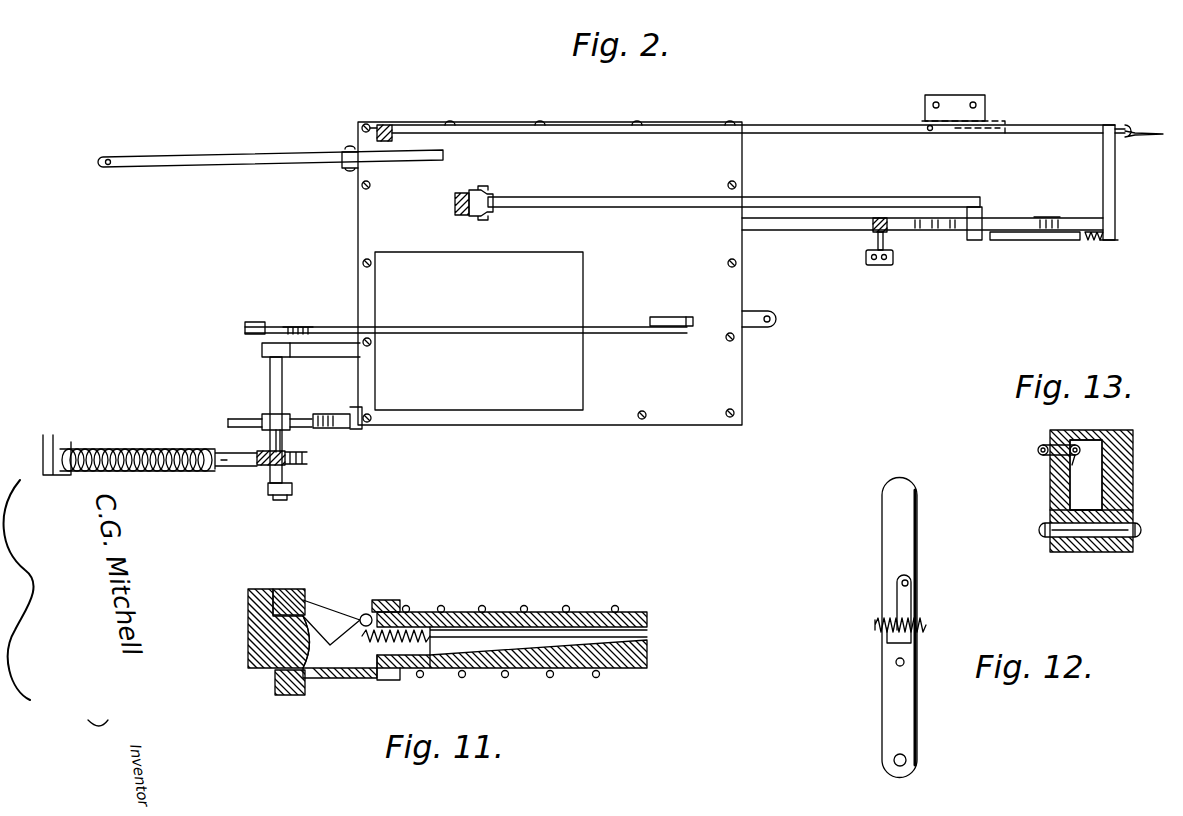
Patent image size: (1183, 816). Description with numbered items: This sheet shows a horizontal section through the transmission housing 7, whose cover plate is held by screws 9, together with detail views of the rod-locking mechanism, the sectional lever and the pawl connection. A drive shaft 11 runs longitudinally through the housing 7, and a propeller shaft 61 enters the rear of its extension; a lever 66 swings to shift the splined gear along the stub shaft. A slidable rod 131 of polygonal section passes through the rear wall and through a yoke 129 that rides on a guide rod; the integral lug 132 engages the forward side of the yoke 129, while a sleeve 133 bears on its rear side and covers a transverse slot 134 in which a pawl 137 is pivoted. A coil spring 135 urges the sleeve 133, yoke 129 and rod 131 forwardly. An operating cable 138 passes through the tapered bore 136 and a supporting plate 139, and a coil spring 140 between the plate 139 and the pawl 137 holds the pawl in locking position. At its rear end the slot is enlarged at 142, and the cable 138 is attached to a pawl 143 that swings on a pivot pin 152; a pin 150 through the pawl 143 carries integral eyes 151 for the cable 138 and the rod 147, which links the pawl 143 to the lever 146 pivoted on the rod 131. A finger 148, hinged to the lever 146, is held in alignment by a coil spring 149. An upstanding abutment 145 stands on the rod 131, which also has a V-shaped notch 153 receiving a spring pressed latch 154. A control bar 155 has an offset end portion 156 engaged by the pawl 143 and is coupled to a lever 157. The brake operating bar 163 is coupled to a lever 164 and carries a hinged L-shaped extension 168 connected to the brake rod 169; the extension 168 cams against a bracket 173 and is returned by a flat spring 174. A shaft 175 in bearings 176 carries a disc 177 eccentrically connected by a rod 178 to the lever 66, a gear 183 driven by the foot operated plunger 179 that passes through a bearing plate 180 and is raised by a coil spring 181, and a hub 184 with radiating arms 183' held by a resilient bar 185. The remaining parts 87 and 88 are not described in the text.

In FIG. 2, the housing 7 is at (695, 118).
In FIG. 2, the screws 9 is at (728, 410).
In FIG. 2, the drive shaft 11 is at (355, 326).
In FIG. 2, the propeller shaft 61 is at (770, 312).
In FIG. 2, the lever 66 is at (679, 316).
In FIG. 2, the rod 87 is at (213, 157).
In FIG. 2, the bracket 88 is at (342, 168).
In FIG. 11, the yoke 129 is at (290, 588).
In FIG. 2, the slidable rod 131 is at (772, 230).
In FIG. 11, the slidable rod 131 is at (630, 655).
In FIG. 13, the slidable rod 131 is at (1115, 432).
In FIG. 11, the lug 132 is at (248, 600).
In FIG. 11, the sleeve 133 is at (372, 680).
In FIG. 11, the slot 134 is at (333, 660).
In FIG. 11, the coil spring 135 is at (570, 606).
In FIG. 11, the tapered bore 136 is at (540, 680).
In FIG. 11, the pawl 137 is at (345, 610).
In FIG. 11, the operating cable 138 is at (495, 628).
In FIG. 11, the supporting plate 139 is at (440, 655).
In FIG. 11, the coil spring 140 is at (397, 680).
In FIG. 13, the enlarged portion of slot 142 is at (1080, 482).
In FIG. 2, the pawl 143 is at (1002, 242).
In FIG. 13, the pawl 143 is at (1056, 512).
In FIG. 2, the upstanding abutment 145 is at (1048, 216).
In FIG. 12, the lever 146 is at (905, 720).
In FIG. 2, the rod 147 is at (1070, 242).
In FIG. 12, the finger 148 is at (885, 535).
In FIG. 12, the coil spring 149 is at (928, 625).
In FIG. 13, the pin 150 is at (1060, 438).
In FIG. 13, the eyes 151 is at (1052, 465).
In FIG. 13, the pivot pin 152 is at (1095, 550).
In FIG. 2, the V-shaped notch 153 is at (933, 232).
In FIG. 2, the spring pressed latch 154 is at (872, 232).
In FIG. 2, the control bar 155 is at (817, 198).
In FIG. 2, the offset end portion 156 is at (982, 212).
In FIG. 2, the lever 157 is at (455, 203).
In FIG. 2, the brake operating bar 163 is at (808, 128).
In FIG. 2, the lever 164 is at (385, 128).
In FIG. 2, the L-shaped extension 168 is at (1103, 158).
In FIG. 2, the brake rod 169 is at (1145, 128).
In FIG. 2, the bracket 173 is at (990, 124).
In FIG. 2, the flat spring 174 is at (945, 135).
In FIG. 2, the shaft 175 is at (270, 378).
In FIG. 2, the bearings 176 is at (262, 350).
In FIG. 2, the disc 177 is at (258, 322).
In FIG. 2, the rod 178 is at (313, 328).
In FIG. 2, the foot operated plunger 179 is at (222, 468).
In FIG. 2, the bearing plate 180 is at (53, 436).
In FIG. 2, the coil spring 181 is at (112, 450).
In FIG. 2, the gear 183 is at (302, 467).
In FIG. 2, the radiating arms 183' is at (279, 401).
In FIG. 2, the hub 184 is at (285, 440).
In FIG. 2, the resilient bar 185 is at (345, 408).